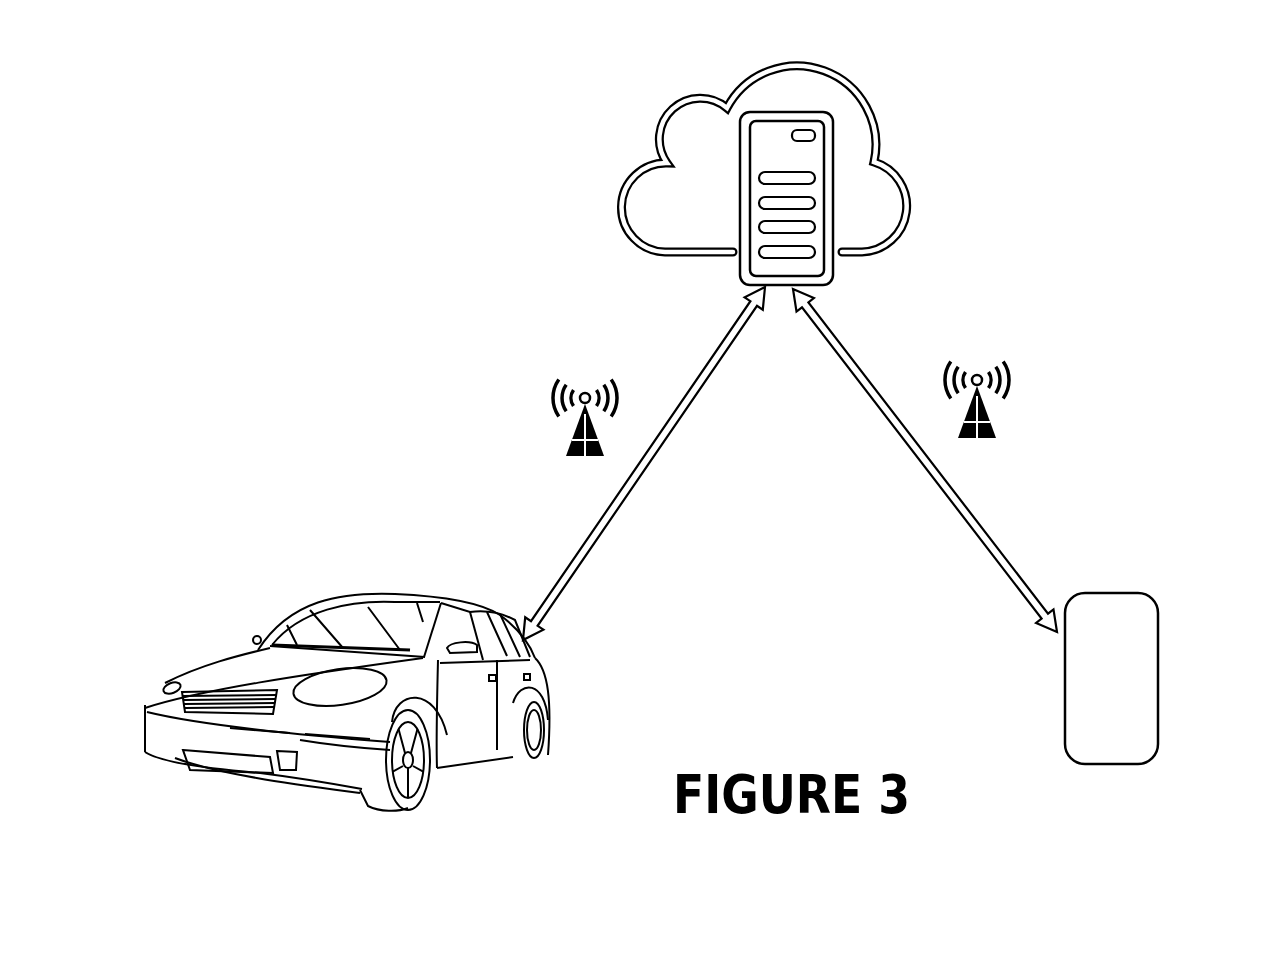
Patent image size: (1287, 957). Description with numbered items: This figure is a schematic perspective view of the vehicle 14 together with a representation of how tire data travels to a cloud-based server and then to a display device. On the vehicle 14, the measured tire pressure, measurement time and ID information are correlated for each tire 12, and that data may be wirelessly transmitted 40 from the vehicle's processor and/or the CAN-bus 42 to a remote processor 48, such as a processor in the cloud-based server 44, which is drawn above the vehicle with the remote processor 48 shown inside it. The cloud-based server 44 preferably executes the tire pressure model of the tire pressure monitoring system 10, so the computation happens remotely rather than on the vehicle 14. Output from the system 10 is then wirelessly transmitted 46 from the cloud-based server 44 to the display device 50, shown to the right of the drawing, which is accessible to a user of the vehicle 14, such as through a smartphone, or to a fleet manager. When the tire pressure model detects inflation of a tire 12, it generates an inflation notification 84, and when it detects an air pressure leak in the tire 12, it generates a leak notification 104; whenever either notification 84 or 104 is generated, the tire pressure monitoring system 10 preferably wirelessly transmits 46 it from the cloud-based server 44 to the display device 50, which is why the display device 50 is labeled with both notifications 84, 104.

The tire pressure monitoring system 10 is at (1122, 164).
The tire 12 is at (443, 794).
The vehicle 14 is at (557, 669).
The wireless transmission 40 is at (600, 522).
The CAN-bus 42 is at (187, 731).
The cloud-based server 44 is at (698, 258).
The wireless transmission 46 is at (963, 500).
The remote processor 48 is at (835, 188).
The display device 50 is at (1166, 678).
The inflation notification 84 is at (1111, 681).
The leak notification 104 is at (1111, 681).